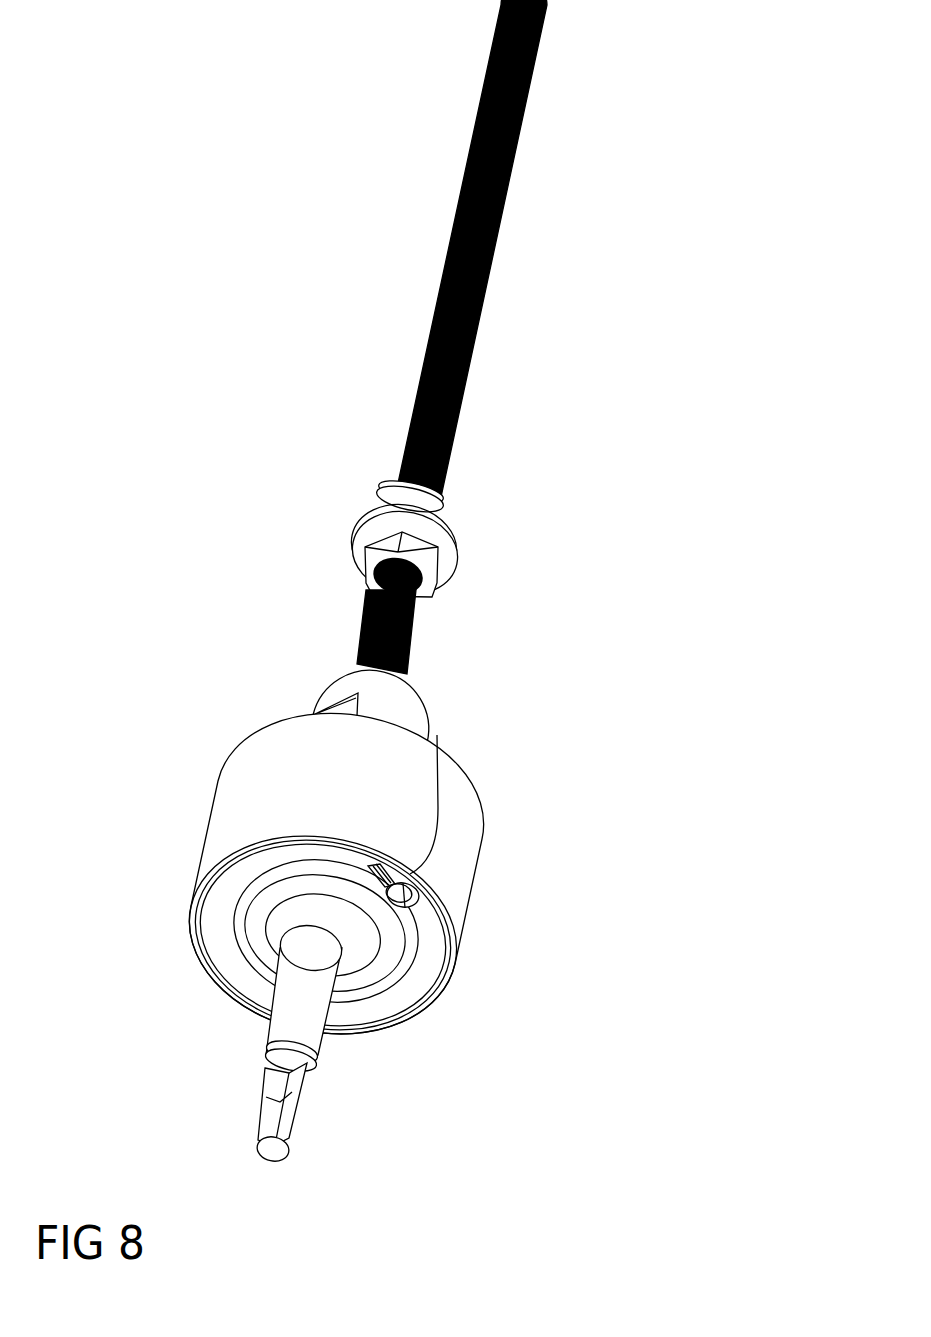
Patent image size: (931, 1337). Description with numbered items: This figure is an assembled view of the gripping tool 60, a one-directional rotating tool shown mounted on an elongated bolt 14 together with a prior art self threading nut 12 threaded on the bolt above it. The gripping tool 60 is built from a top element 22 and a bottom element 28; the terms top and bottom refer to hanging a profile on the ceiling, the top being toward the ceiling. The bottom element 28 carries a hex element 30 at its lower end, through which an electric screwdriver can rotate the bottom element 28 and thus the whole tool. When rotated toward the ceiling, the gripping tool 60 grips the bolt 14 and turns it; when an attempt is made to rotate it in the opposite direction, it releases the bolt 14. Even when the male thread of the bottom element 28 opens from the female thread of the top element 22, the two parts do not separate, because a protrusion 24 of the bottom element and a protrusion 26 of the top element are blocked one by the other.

The prior art self threading nut 12 is at (357, 555).
The elongated bolt 14 is at (463, 182).
The top element 22 is at (233, 787).
The protrusion of the bottom element 24 is at (437, 760).
The protrusion of the top element 26 is at (405, 895).
The bottom element 28 is at (307, 1025).
The hex element 30 is at (262, 1128).
The gripping tool 60 is at (527, 835).